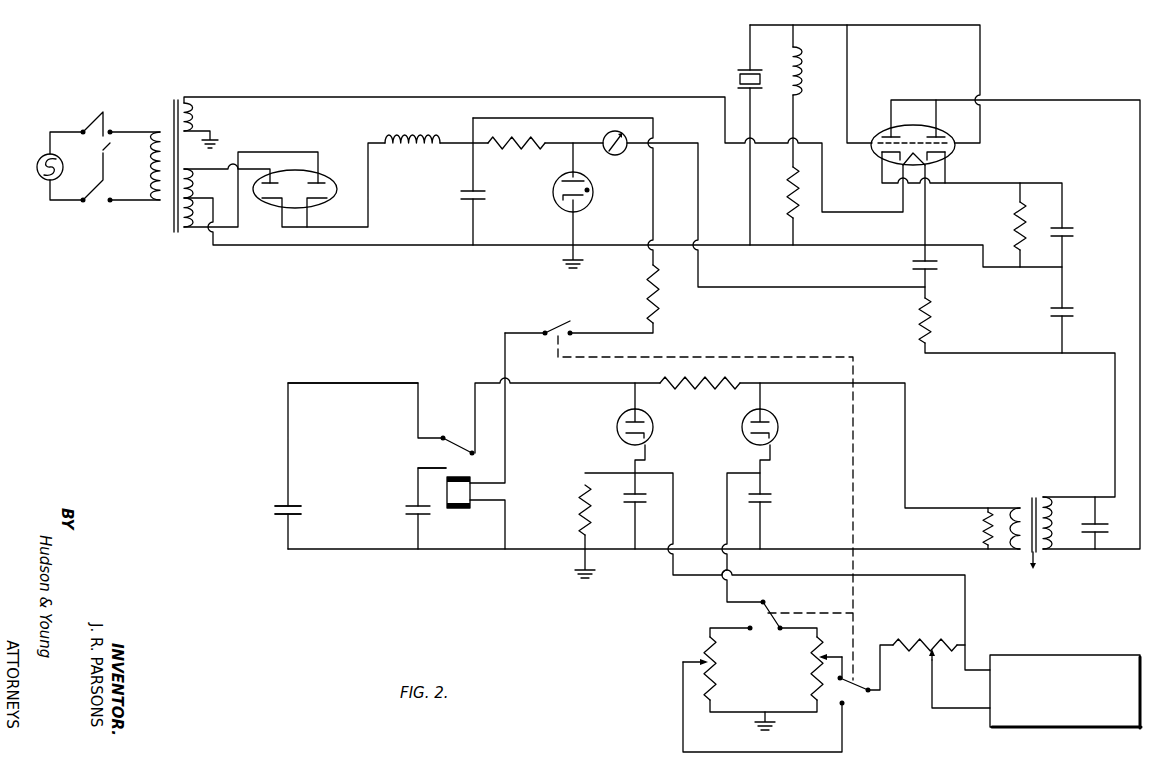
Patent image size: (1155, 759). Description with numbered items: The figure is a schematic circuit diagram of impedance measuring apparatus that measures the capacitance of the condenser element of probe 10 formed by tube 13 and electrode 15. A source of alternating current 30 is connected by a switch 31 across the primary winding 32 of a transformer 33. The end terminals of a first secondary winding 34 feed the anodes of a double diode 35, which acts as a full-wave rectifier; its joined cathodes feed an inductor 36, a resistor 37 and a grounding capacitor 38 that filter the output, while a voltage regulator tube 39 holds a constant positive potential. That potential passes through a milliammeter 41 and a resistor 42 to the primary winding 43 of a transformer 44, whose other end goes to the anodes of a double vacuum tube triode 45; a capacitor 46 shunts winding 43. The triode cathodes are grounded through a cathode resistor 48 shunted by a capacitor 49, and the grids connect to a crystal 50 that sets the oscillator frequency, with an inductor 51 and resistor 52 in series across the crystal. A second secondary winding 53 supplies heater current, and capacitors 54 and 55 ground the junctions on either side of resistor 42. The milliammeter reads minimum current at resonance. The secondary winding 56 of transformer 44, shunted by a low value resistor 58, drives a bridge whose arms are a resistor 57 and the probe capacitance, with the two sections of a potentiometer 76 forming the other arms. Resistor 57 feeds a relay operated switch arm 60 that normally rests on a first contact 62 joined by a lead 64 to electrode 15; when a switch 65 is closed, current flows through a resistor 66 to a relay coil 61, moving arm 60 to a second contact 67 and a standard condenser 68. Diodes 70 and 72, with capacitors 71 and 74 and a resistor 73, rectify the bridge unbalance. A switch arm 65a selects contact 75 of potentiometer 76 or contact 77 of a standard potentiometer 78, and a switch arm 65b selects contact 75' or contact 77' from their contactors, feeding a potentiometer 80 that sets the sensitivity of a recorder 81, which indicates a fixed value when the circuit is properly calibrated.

The probe 10 is at (270, 509).
The tube 13 is at (281, 517).
The electrode 15 is at (291, 506).
The source of alternating current 30 is at (43, 173).
The switch 31 is at (92, 114).
The primary winding 32 is at (157, 171).
The transformer 33 is at (175, 235).
The first secondary winding 34 is at (194, 177).
The double diode 35 is at (322, 173).
The inductor 36 is at (393, 151).
The resistor 37 is at (516, 151).
The capacitor 38 is at (456, 198).
The voltage regulator tube 39 is at (591, 196).
The milliammeter 41 is at (614, 160).
The resistor 42 is at (932, 319).
The primary winding 43 is at (1054, 543).
The transformer 44 is at (1033, 488).
The double vacuum tube triode 45 is at (953, 151).
The capacitor 46 is at (1105, 528).
The cathode resistor 48 is at (1012, 207).
The capacitor 49 is at (1076, 233).
The crystal 50 is at (737, 78).
The inductor 51 is at (804, 78).
The resistor 52 is at (798, 219).
The second secondary winding 53 is at (198, 118).
The capacitor 54 is at (939, 266).
The capacitor 55 is at (1076, 312).
The secondary winding 56 is at (1016, 546).
The resistor 57 is at (697, 392).
The low value resistor 58 is at (985, 530).
The switch arm 60 is at (470, 449).
The relay coil 61 is at (452, 509).
The first contact 62 is at (445, 435).
The lead 64 is at (370, 381).
The switch 65 is at (564, 322).
The switch arm 65a is at (769, 604).
The switch arm 65b is at (870, 687).
The resistor 66 is at (660, 303).
The second contact 67 is at (446, 469).
The condenser 68 is at (407, 510).
The diode 70 is at (779, 426).
The capacitor 71 is at (773, 497).
The diode 72 is at (617, 428).
The resistor 73 is at (578, 514).
The capacitor 74 is at (624, 501).
The contact 75 is at (784, 645).
The switch contact 75' is at (865, 645).
The potentiometer 76 is at (815, 675).
The contact 77 is at (742, 642).
The switch contact 77' is at (864, 708).
The potentiometer 78 is at (706, 650).
The potentiometer 80 is at (918, 645).
The recorder 81 is at (1072, 655).